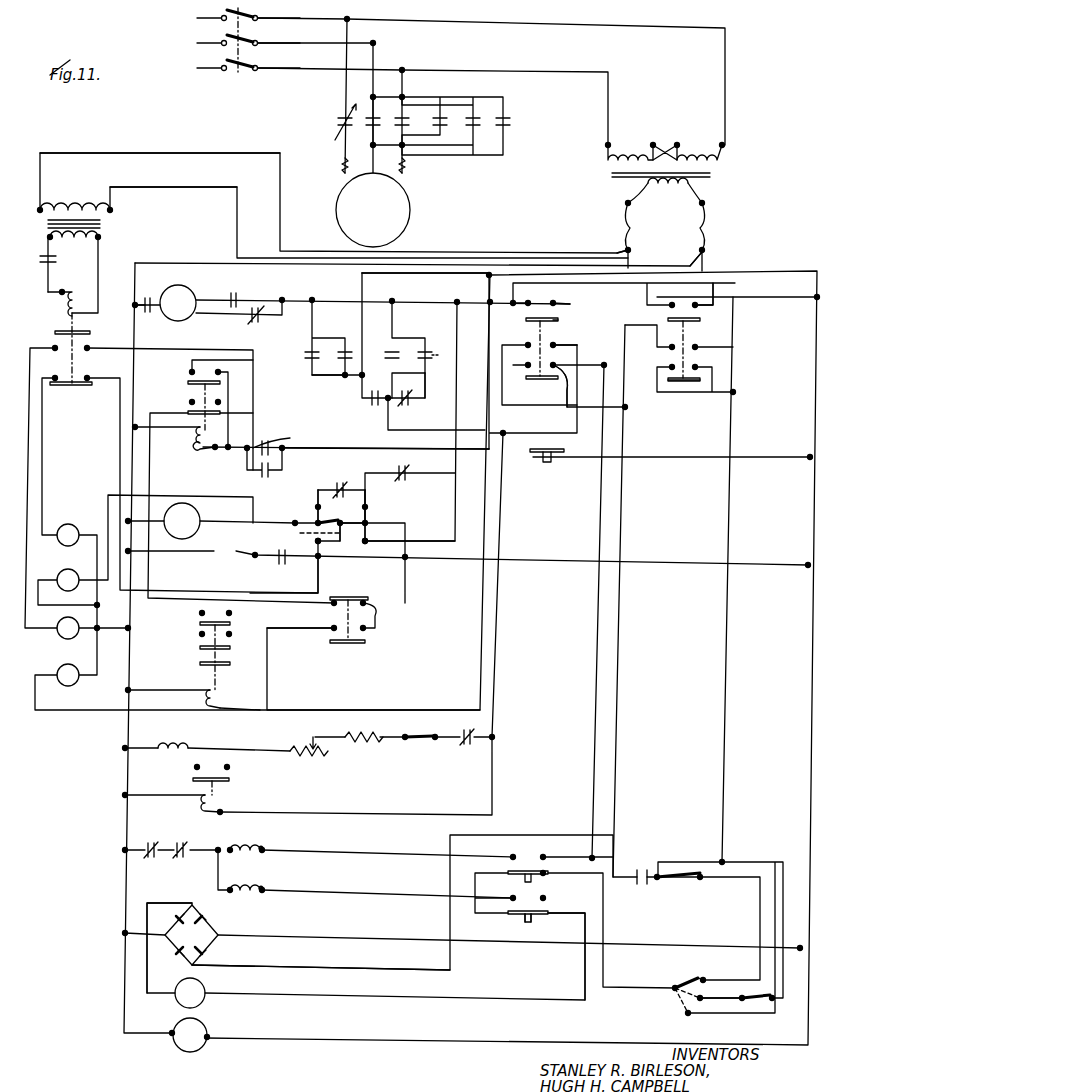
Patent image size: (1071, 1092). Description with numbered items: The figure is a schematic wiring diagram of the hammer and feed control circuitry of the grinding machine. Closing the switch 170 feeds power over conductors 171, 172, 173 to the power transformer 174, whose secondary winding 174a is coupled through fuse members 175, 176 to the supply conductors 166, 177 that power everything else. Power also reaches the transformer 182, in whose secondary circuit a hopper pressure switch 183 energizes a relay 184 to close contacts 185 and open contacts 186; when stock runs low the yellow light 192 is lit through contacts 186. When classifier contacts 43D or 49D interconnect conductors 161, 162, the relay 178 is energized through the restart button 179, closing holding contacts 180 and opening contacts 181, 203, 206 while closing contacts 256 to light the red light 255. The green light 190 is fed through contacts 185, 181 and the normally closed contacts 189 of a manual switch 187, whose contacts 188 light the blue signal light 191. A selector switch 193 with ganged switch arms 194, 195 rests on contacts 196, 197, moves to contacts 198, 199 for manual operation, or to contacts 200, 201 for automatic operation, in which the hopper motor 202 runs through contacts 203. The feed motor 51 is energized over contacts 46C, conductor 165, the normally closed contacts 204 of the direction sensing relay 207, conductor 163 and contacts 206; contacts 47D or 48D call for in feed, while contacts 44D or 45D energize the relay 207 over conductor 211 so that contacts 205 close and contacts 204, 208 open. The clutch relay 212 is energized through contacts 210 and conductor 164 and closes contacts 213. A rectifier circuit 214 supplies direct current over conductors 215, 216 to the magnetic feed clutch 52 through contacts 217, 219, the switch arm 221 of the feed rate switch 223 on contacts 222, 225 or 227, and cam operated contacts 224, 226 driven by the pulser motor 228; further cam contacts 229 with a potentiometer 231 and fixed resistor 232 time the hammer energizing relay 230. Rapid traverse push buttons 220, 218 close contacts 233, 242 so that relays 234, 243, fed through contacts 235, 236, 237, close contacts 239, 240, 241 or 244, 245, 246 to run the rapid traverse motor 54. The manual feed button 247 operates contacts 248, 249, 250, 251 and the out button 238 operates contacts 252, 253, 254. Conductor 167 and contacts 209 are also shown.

The switch 170 is at (243, 80).
The conductor 171 is at (288, 22).
The conductor 172 is at (288, 47).
The conductor 173 is at (290, 74).
The contacts 239 is at (342, 118).
The contacts 240 is at (338, 138).
The contacts 241 is at (405, 115).
The contacts 244 is at (448, 112).
The contacts 245 is at (478, 118).
The contacts 246 is at (512, 122).
The rapid traverse motor 54 is at (373, 210).
The power transformer 174 is at (723, 193).
The secondary winding 174a is at (664, 215).
The fuse member 175 is at (630, 245).
The fuse member 176 is at (706, 242).
The conductor 166 is at (136, 153).
The conductor 177 is at (160, 188).
The transformer 182 is at (120, 240).
The hopper pressure switch 183 is at (52, 260).
The relay 184 is at (76, 300).
The contacts 185 is at (85, 350).
The contacts 186 is at (80, 384).
The conductor 165 is at (152, 300).
The feed motor 51 is at (178, 303).
The contacts 46C is at (147, 312).
The contacts 205 is at (236, 294).
The contacts 204 is at (252, 328).
The contacts 44D is at (305, 354).
The contacts 45D is at (338, 354).
The conductor 164 is at (322, 377).
The conductor 211 is at (449, 273).
The conductor 163 is at (405, 338).
The contacts 47D is at (425, 352).
The contacts 48D is at (440, 355).
The conductor 167 is at (428, 392).
The contacts 210 is at (374, 406).
The contact 209 is at (410, 410).
The conductor 162 is at (332, 448).
The contacts 43D is at (270, 440).
The conductor 161 is at (264, 441).
The contacts 49D is at (260, 476).
The contacts 180 is at (188, 378).
The contacts 181 is at (195, 418).
The relay 178 is at (197, 451).
The yellow light 192 is at (82, 514).
The red light 255 is at (80, 568).
The indicator light 190 is at (65, 639).
The blue signal light 191 is at (72, 685).
The hopper motor 202 is at (182, 521).
The contacts 256 is at (282, 564).
The selector switch 193 is at (300, 517).
The switch arm member 194 is at (298, 532).
The contacts 196 is at (330, 515).
The contacts 197 is at (362, 522).
The contacts 199 is at (368, 541).
The contacts 198 is at (320, 545).
The switch arm member 195 is at (345, 538).
The contacts 201 is at (368, 508).
The contacts 200 is at (318, 506).
The contacts 203 is at (345, 484).
The contacts 206 is at (408, 482).
The manual switch 187 is at (350, 645).
The contacts 189 is at (385, 614).
The contacts 188 is at (357, 632).
The direction sensing relay 207 is at (199, 687).
The hammer energizing relay 230 is at (182, 745).
The potentiometer 231 is at (316, 760).
The fixed resistor 232 is at (360, 736).
The cam operated contacts 229 is at (421, 752).
The contacts 208 is at (470, 730).
The clutch relay 212 is at (222, 800).
The contacts 235 is at (145, 848).
The contacts 236 is at (180, 842).
The rapid traverse 'in' relay 234 is at (256, 848).
The rapid traverse 'out' relay 243 is at (258, 888).
The D.-C. rectifier circuit 214 is at (205, 932).
The conductor 215 is at (190, 884).
The conductor 216 is at (255, 968).
The magnetic feed clutch 52 is at (190, 993).
The pulser motor 228 is at (190, 1048).
The contacts 233 is at (522, 852).
The contacts 219 is at (500, 872).
The rapid traverse push button 220 is at (538, 875).
The rapid traverse push button 218 is at (523, 925).
The contacts 217 is at (533, 924).
The contacts 242 is at (565, 905).
The contacts 213 is at (642, 868).
The cam operated contacts 224 is at (690, 880).
The switch arm 221 is at (683, 983).
The contacts 222 is at (705, 978).
The feed rate switch 223 is at (662, 1011).
The contacts 227 is at (686, 1016).
The contacts 225 is at (702, 1003).
The cam operated contacts 226 is at (762, 1002).
The restart button 179 is at (550, 465).
The manual feed 'in' button 247 is at (551, 402).
The contacts 248 is at (540, 302).
The contacts 249 is at (555, 322).
The contacts 250 is at (557, 346).
The contacts 251 is at (567, 410).
The contacts 252 is at (723, 290).
The contacts 237 is at (705, 320).
The contacts 253 is at (700, 348).
The contacts 254 is at (700, 368).
The manual feed 'out' button 238 is at (680, 385).